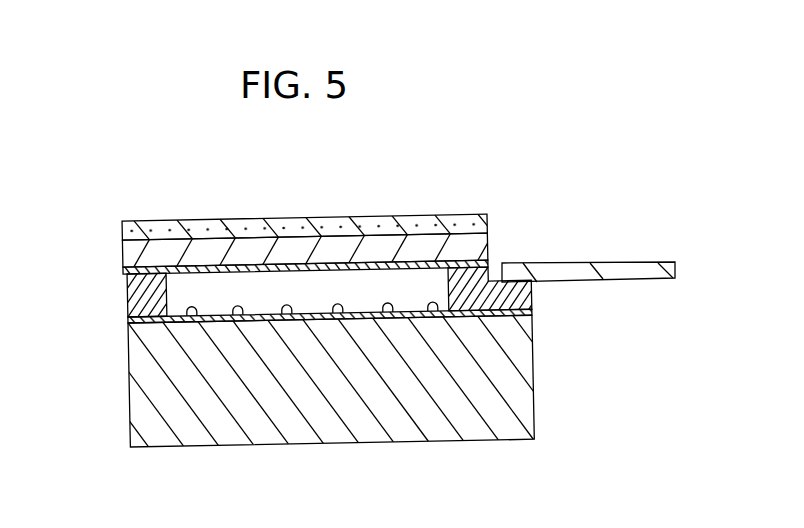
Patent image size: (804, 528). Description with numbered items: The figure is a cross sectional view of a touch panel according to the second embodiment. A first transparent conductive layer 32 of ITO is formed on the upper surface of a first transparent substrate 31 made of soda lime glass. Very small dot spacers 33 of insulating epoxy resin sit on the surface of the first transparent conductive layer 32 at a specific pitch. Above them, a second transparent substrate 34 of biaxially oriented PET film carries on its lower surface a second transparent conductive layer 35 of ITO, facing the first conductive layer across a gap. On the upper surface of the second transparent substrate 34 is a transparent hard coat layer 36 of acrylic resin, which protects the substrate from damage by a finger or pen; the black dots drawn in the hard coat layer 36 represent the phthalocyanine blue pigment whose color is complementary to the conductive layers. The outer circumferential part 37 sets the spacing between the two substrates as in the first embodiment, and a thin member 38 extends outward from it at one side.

The first transparent substrate 31 is at (143, 382).
The first transparent conductive layer 32 is at (128, 320).
The dot spacers 33 is at (340, 305).
The second transparent substrate 34 is at (220, 250).
The second transparent conductive layer 35 is at (285, 268).
The transparent hard coat layer 36 is at (165, 220).
The outer circumferential part 37 is at (135, 295).
The lead terminal 38 is at (650, 275).